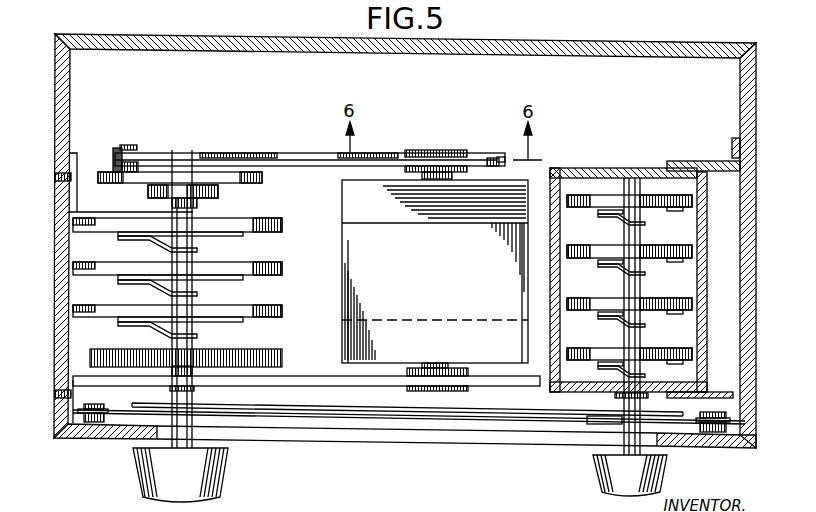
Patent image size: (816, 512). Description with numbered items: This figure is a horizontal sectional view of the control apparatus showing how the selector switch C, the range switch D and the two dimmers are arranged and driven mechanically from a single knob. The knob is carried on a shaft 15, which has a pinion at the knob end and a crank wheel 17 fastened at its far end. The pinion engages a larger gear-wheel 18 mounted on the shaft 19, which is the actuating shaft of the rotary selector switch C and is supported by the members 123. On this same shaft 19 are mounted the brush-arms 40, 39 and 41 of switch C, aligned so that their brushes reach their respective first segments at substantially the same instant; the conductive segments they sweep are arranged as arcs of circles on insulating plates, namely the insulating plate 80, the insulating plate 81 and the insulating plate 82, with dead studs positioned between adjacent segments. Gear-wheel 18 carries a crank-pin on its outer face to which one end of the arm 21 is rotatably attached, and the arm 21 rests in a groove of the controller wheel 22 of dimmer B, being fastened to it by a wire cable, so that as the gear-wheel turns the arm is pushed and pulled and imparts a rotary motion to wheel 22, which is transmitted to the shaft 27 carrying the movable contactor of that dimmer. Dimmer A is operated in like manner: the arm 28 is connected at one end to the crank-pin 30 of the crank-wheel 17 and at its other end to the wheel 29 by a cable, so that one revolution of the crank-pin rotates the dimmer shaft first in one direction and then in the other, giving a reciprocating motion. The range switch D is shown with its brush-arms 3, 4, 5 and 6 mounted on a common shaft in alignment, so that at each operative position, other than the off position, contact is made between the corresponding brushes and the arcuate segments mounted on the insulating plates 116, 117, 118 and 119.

The selector switch C is at (78, 356).
The range switch D is at (683, 372).
The brush-arm 3 is at (603, 214).
The brush-arm 4 is at (605, 266).
The brush-arm 5 is at (605, 316).
The brush-arm 6 is at (600, 365).
The shaft 15 is at (187, 397).
The crank wheel 17 is at (106, 168).
The gear-wheel 18 is at (282, 358).
The shaft 19 is at (195, 345).
The arm 21 is at (350, 374).
The controller wheel 22 is at (455, 388).
The shaft 27 is at (433, 363).
The arm 28 is at (247, 156).
The wheel 29 is at (433, 150).
The crank-pin 30 is at (125, 147).
The brush-arm 39 is at (125, 280).
The brush-arm 40 is at (125, 238).
The brush-arm 41 is at (125, 323).
The insulating plate 80 is at (280, 228).
The insulating plate 81 is at (280, 271).
The insulating plate 82 is at (280, 312).
The insulating plate 116 is at (682, 195).
The insulating plate 117 is at (683, 246).
The insulating plate 118 is at (683, 297).
The insulating plate 119 is at (677, 349).
The supporting members 123 is at (122, 212).